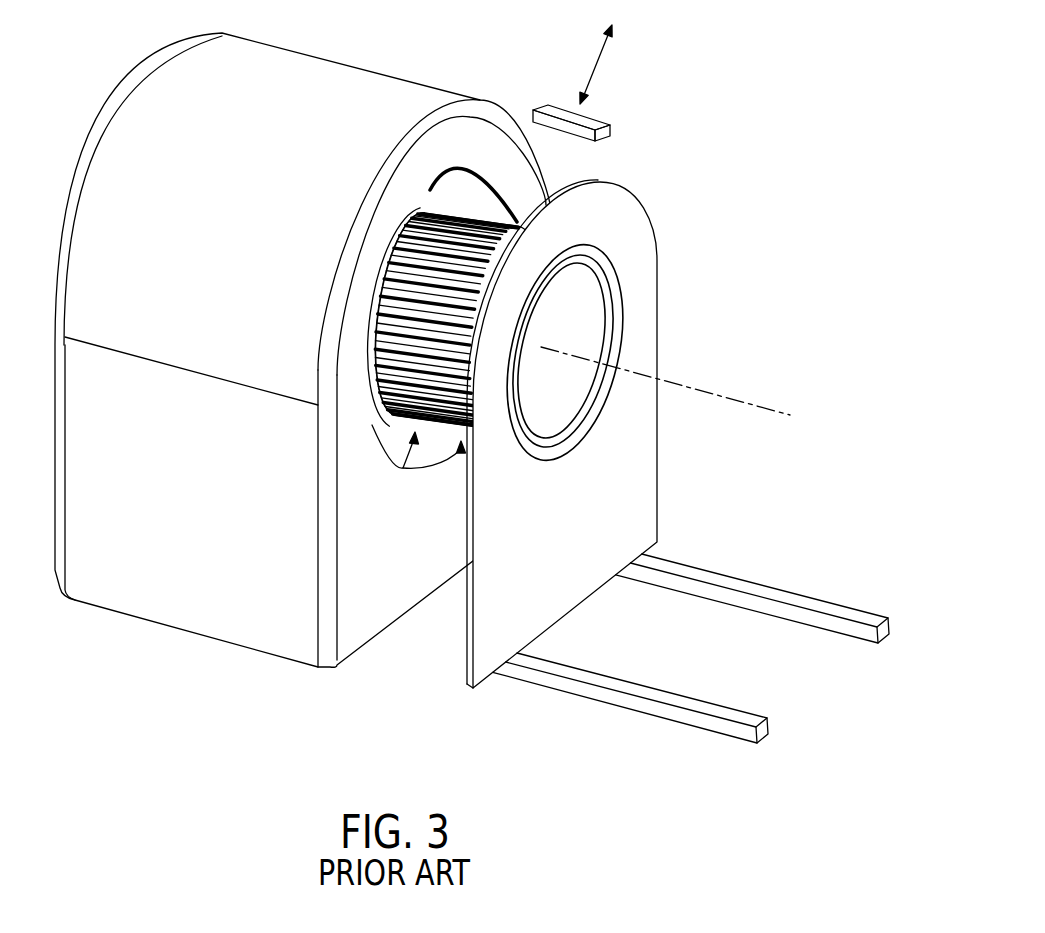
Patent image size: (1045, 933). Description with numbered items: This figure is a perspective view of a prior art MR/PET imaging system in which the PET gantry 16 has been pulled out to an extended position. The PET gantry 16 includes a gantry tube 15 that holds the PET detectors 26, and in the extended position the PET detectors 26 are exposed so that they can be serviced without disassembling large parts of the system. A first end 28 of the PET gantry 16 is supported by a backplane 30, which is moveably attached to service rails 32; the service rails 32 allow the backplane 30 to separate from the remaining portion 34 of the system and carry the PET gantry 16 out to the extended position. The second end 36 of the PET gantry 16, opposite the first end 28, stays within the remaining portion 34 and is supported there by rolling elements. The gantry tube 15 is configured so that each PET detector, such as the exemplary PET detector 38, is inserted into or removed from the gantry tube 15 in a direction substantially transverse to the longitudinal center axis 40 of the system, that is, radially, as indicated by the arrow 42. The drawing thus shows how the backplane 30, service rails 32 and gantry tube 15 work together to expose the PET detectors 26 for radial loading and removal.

The gantry tube 15 is at (378, 345).
The PET gantry 16 is at (386, 412).
The PET detectors 26 is at (403, 468).
The first end 28 is at (461, 447).
The backplane 30 is at (657, 291).
The service rails 32 is at (780, 590).
The remaining portion 34 is at (405, 78).
The second end 36 is at (460, 200).
The PET detector 38 is at (610, 128).
The longitudinal center axis 40 is at (736, 400).
The arrow 42 is at (598, 68).